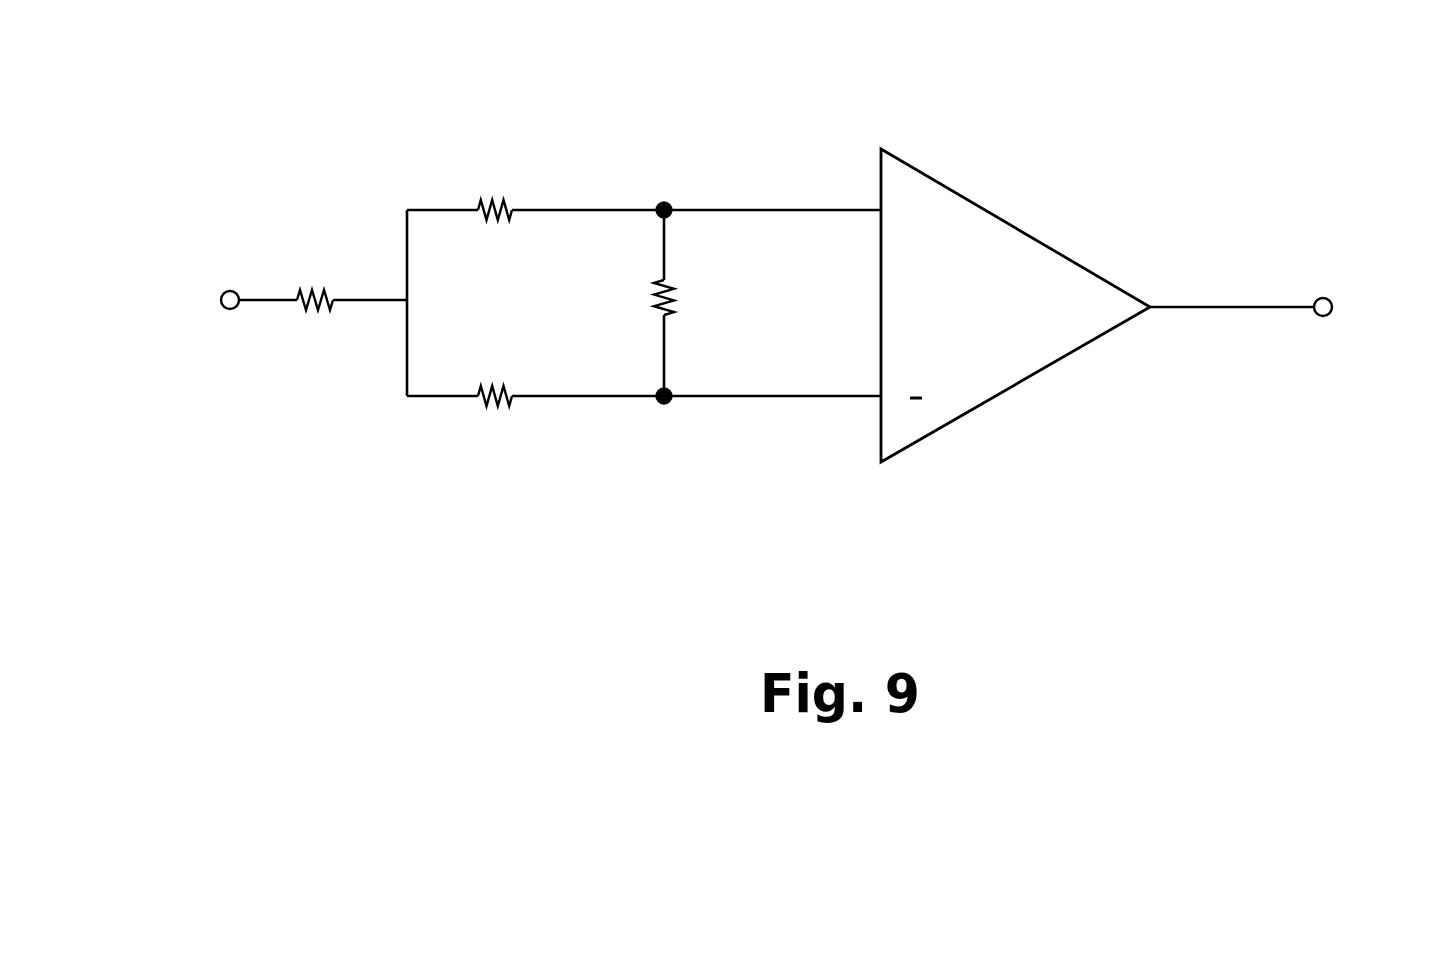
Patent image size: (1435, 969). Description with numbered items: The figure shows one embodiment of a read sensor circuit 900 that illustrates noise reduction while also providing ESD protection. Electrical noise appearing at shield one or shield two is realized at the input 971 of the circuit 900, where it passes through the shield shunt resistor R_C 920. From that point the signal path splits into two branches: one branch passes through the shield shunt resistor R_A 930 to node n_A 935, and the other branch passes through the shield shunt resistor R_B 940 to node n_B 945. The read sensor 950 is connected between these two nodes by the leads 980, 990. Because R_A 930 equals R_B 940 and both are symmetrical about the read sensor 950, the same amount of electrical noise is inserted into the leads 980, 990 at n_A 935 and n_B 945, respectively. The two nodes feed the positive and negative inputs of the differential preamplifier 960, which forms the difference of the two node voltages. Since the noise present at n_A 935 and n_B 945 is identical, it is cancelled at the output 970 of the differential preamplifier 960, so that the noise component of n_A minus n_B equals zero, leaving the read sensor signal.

The read sensor circuit 900 is at (377, 87).
The shield shunt resistor R_C 920 is at (305, 252).
The shield shunt resistor R_A 930 is at (518, 185).
The node n_A 935 is at (678, 178).
The shield shunt resistor R_B 940 is at (523, 443).
The node n_B 945 is at (688, 442).
The read sensor 950 is at (667, 282).
The differential preamplifier 960 is at (952, 188).
The output 970 is at (1330, 297).
The input 971 is at (233, 309).
The lead 980 is at (663, 243).
The lead 990 is at (663, 353).